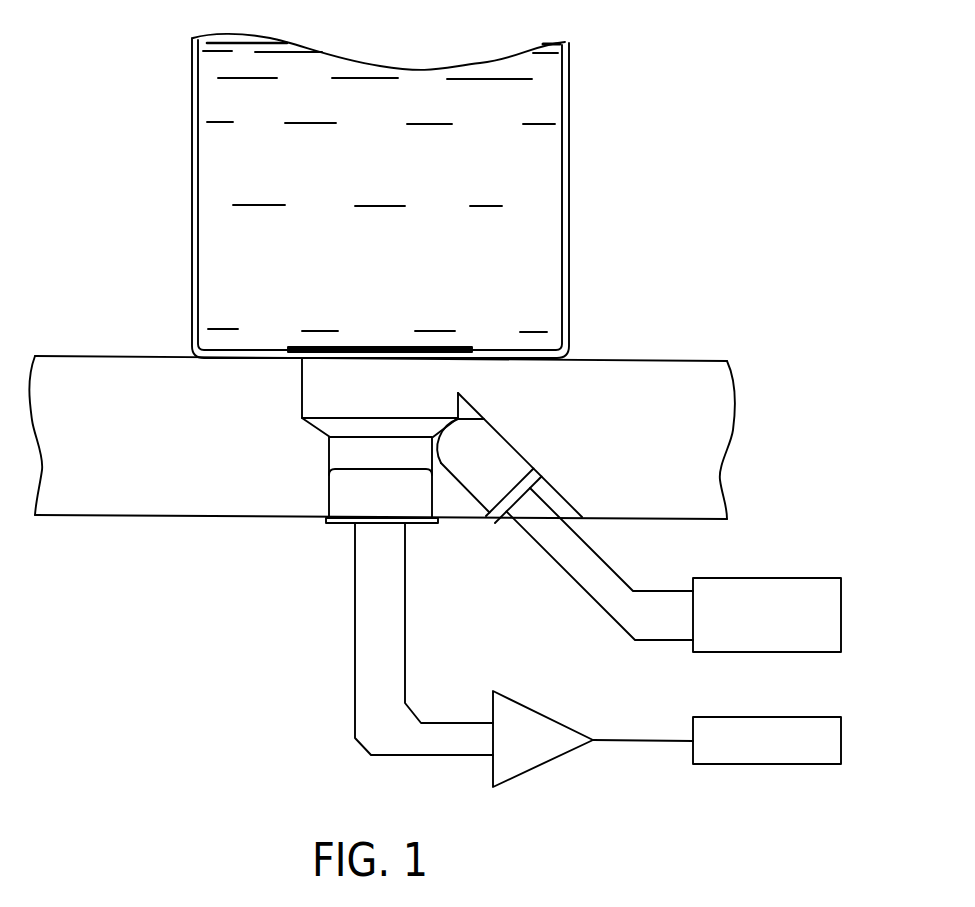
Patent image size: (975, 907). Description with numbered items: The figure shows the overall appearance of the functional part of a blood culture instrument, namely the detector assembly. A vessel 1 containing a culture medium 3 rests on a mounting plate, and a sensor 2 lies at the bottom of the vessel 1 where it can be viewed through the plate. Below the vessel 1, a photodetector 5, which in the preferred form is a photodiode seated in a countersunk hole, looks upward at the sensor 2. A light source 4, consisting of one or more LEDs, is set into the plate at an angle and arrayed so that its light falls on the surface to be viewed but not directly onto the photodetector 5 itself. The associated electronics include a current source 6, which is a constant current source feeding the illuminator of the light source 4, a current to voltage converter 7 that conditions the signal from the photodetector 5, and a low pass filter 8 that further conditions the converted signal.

The vessel 1 is at (570, 141).
The sensor 2 is at (464, 348).
The culture medium 3 is at (247, 173).
The light source 4 is at (483, 463).
The photodetector 5 is at (353, 493).
The current source 6 is at (842, 607).
The current to voltage converter 7 is at (543, 765).
The low pass filter 8 is at (842, 742).